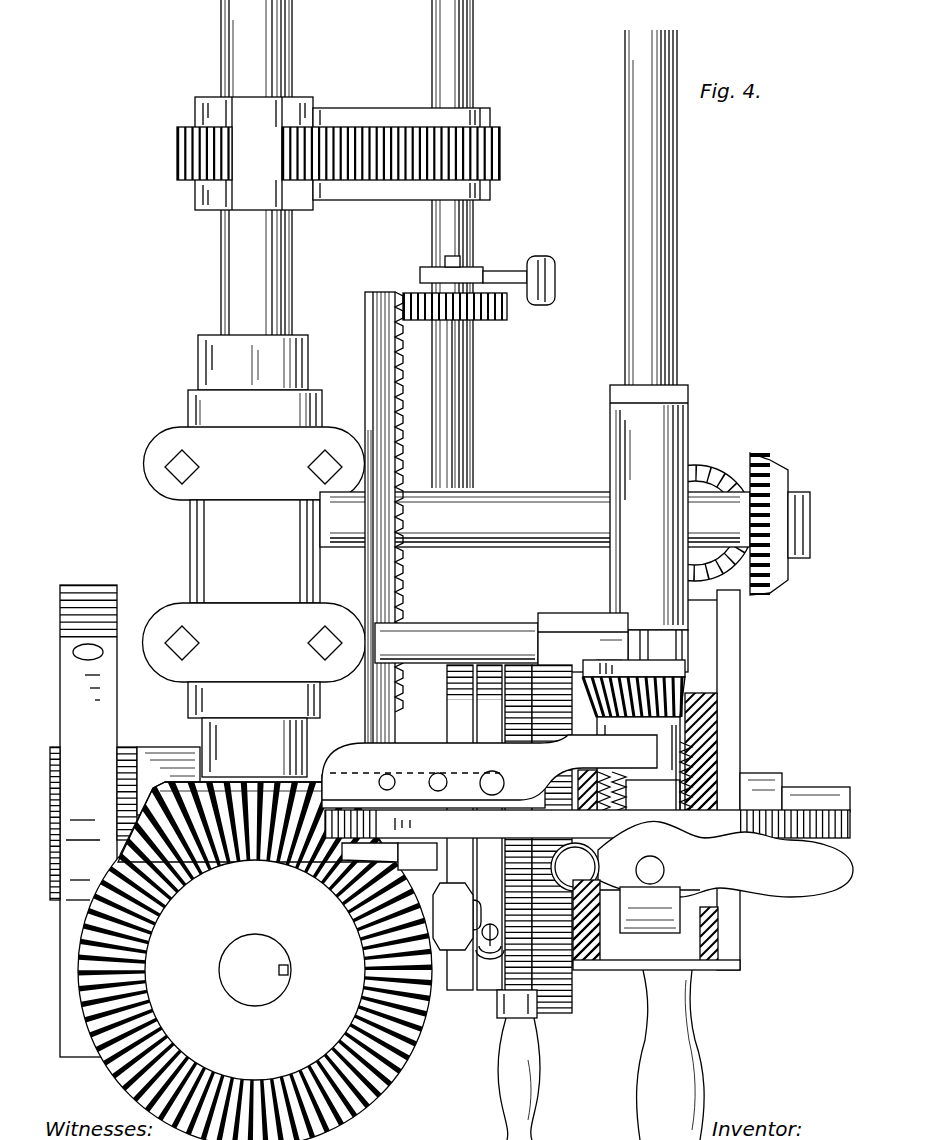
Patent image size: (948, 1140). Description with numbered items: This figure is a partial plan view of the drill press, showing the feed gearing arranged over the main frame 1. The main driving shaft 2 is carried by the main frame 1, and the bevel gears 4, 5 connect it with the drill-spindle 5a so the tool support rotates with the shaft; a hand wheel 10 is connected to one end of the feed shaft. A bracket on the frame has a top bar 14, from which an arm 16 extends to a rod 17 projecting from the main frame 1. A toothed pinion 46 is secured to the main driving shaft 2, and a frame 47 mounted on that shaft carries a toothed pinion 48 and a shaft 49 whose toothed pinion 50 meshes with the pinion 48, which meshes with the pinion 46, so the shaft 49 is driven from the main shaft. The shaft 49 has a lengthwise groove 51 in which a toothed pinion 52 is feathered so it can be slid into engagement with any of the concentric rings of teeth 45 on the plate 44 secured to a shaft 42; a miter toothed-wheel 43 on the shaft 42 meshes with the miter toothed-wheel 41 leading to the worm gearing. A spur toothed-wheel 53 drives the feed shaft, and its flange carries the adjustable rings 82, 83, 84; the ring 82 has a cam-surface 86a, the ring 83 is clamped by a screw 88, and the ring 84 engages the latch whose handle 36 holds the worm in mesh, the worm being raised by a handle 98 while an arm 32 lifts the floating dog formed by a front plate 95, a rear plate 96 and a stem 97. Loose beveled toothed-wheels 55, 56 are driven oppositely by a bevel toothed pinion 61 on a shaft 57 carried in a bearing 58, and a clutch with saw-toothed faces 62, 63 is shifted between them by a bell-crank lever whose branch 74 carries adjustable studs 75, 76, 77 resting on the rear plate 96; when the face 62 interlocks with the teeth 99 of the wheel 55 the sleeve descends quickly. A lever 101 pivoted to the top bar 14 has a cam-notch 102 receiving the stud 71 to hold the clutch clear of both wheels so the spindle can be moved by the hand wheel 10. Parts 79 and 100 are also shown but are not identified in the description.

The main frame 1 is at (254, 526).
The main driving shaft 2 is at (265, 167).
The bevel gear 4 is at (254, 747).
The bevel gear 5 is at (255, 961).
The drill-spindle 5a is at (255, 970).
The hand wheel 10 is at (125, 809).
The top bar 14 is at (587, 824).
The arm 16 is at (740, 660).
The rod 17 is at (456, 643).
The arm 32 is at (656, 960).
The handle 36 is at (518, 1065).
The miter toothed-wheel 41 is at (695, 505).
The shaft 42 is at (535, 519).
The miter toothed-wheel 43 is at (780, 517).
The plate 44 is at (386, 518).
The concentric rings of teeth 45 is at (412, 502).
The toothed pinion 46 is at (185, 153).
The frame 47 is at (372, 200).
The toothed pinion 48 is at (406, 139).
The shaft 49 is at (467, 244).
The toothed pinion 50 is at (406, 153).
The lengthwise groove 51 is at (462, 343).
The toothed pinion 52 is at (507, 318).
The spur toothed-wheel 53 is at (572, 624).
The beveled toothed-wheel 55 is at (577, 672).
The beveled toothed-wheel 56 is at (717, 722).
The shaft 57 is at (666, 207).
The bearing 58 is at (663, 528).
The bevel toothed pinion 61 is at (665, 692).
The saw-toothed face 62 is at (620, 775).
The saw-toothed face 63 is at (690, 750).
The stud 71 is at (650, 870).
The branch 74 is at (489, 767).
The stud 75 is at (492, 772).
The stud 76 is at (439, 771).
The stud 77 is at (387, 770).
The block 79 is at (650, 909).
The ring 82 is at (460, 827).
The ring 83 is at (490, 827).
The ring 84 is at (538, 839).
The cam-surface 86a is at (457, 916).
The screw 88 is at (490, 930).
The front plate 95 is at (417, 856).
The rear plate 96 is at (330, 792).
The stem 97 is at (370, 852).
The handle 98 is at (671, 1055).
The teeth 99 is at (604, 812).
The block 100 is at (717, 765).
The lever 101 is at (702, 859).
The cam-notch 102 is at (665, 870).